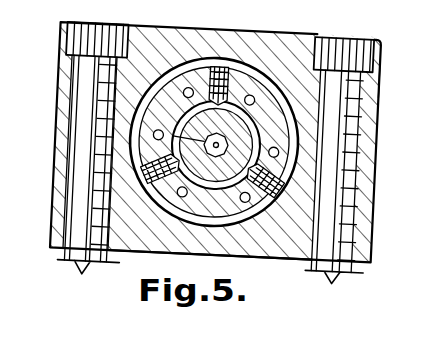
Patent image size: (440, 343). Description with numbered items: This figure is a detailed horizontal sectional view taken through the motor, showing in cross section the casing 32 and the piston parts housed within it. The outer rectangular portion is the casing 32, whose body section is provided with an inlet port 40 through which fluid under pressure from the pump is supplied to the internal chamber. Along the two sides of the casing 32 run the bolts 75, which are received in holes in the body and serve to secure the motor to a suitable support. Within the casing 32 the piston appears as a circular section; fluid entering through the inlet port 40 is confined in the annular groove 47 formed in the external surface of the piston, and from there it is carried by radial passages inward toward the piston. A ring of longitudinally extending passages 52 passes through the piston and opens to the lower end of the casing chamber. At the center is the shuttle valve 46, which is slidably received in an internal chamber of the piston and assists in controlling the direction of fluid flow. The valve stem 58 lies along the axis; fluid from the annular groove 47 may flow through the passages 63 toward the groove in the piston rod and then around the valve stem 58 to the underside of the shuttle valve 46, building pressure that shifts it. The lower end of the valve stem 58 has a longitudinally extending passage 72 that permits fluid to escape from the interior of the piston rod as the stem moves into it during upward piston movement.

The casing 32 is at (152, 36).
The inlet port 40 is at (439, 75).
The shuttle valve 46 is at (233, 113).
The annular groove 47 is at (229, 63).
The passages 52 is at (189, 89).
The valve stem 58 is at (178, 134).
The passages 63 is at (170, 162).
The longitudinally extending passage 72 is at (228, 143).
The bolts 75 is at (86, 212).